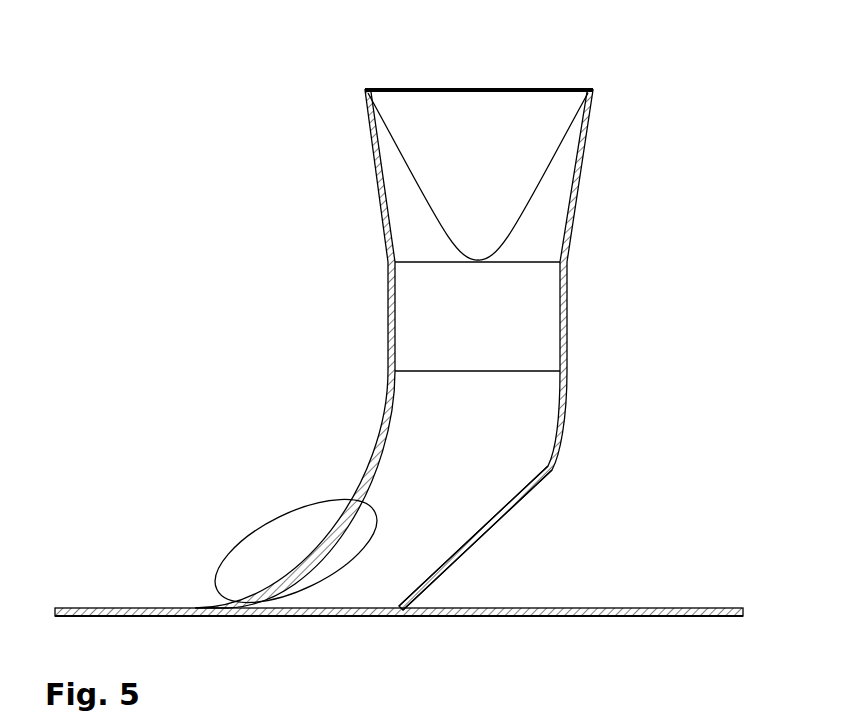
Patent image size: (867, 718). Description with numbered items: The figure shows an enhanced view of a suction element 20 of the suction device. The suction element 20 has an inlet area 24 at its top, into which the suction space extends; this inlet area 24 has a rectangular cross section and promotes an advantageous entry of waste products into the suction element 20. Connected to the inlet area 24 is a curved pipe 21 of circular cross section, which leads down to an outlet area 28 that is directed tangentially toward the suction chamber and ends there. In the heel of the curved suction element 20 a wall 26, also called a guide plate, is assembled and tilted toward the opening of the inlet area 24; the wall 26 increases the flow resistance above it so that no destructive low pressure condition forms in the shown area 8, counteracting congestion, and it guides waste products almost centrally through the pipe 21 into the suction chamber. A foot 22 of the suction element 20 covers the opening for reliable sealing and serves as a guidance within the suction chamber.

The area 8 is at (272, 558).
The suction element 20 is at (470, 308).
The curved pipe 21 is at (566, 312).
The foot 22 is at (702, 608).
The inlet area 24 is at (366, 106).
The wall 26 is at (505, 512).
The outlet area 28 is at (316, 619).